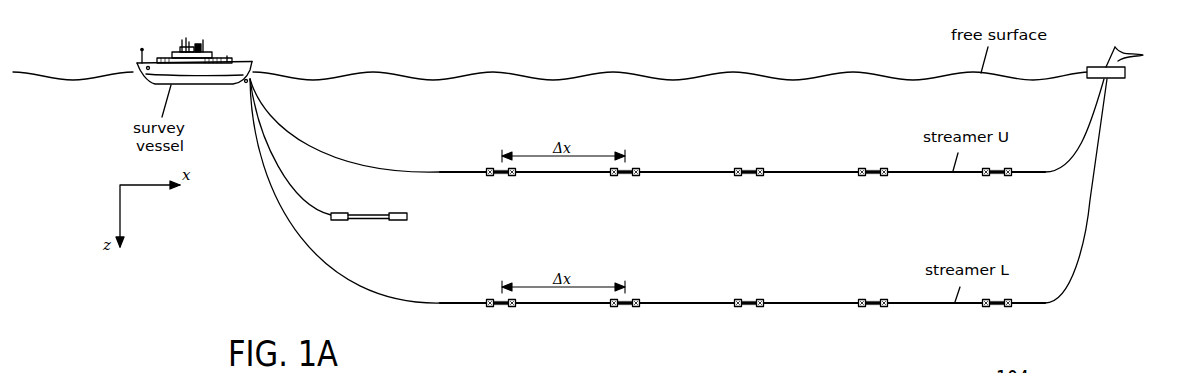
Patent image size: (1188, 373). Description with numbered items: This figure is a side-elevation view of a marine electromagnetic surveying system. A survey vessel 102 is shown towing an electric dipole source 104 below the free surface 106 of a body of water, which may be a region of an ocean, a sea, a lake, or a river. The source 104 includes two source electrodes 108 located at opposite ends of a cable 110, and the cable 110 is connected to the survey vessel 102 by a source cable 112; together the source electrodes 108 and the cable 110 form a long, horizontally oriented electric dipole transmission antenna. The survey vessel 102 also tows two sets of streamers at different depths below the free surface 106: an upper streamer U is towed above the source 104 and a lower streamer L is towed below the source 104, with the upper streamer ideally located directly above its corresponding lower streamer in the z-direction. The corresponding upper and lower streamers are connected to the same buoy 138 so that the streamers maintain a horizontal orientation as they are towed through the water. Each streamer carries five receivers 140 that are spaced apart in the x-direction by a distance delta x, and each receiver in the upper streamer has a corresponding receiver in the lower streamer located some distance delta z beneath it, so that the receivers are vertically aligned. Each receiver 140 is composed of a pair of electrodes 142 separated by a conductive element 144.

The survey vessel 102 is at (213, 55).
The electric dipole source 104 is at (386, 258).
The free surface 106 is at (758, 75).
The source electrodes 108 is at (400, 222).
The cable 110 is at (367, 221).
The source cable 112 is at (318, 196).
The buoy 138 is at (1112, 80).
The receivers 140 is at (750, 237).
The electrodes 142 is at (737, 167).
The conductive element 144 is at (750, 167).